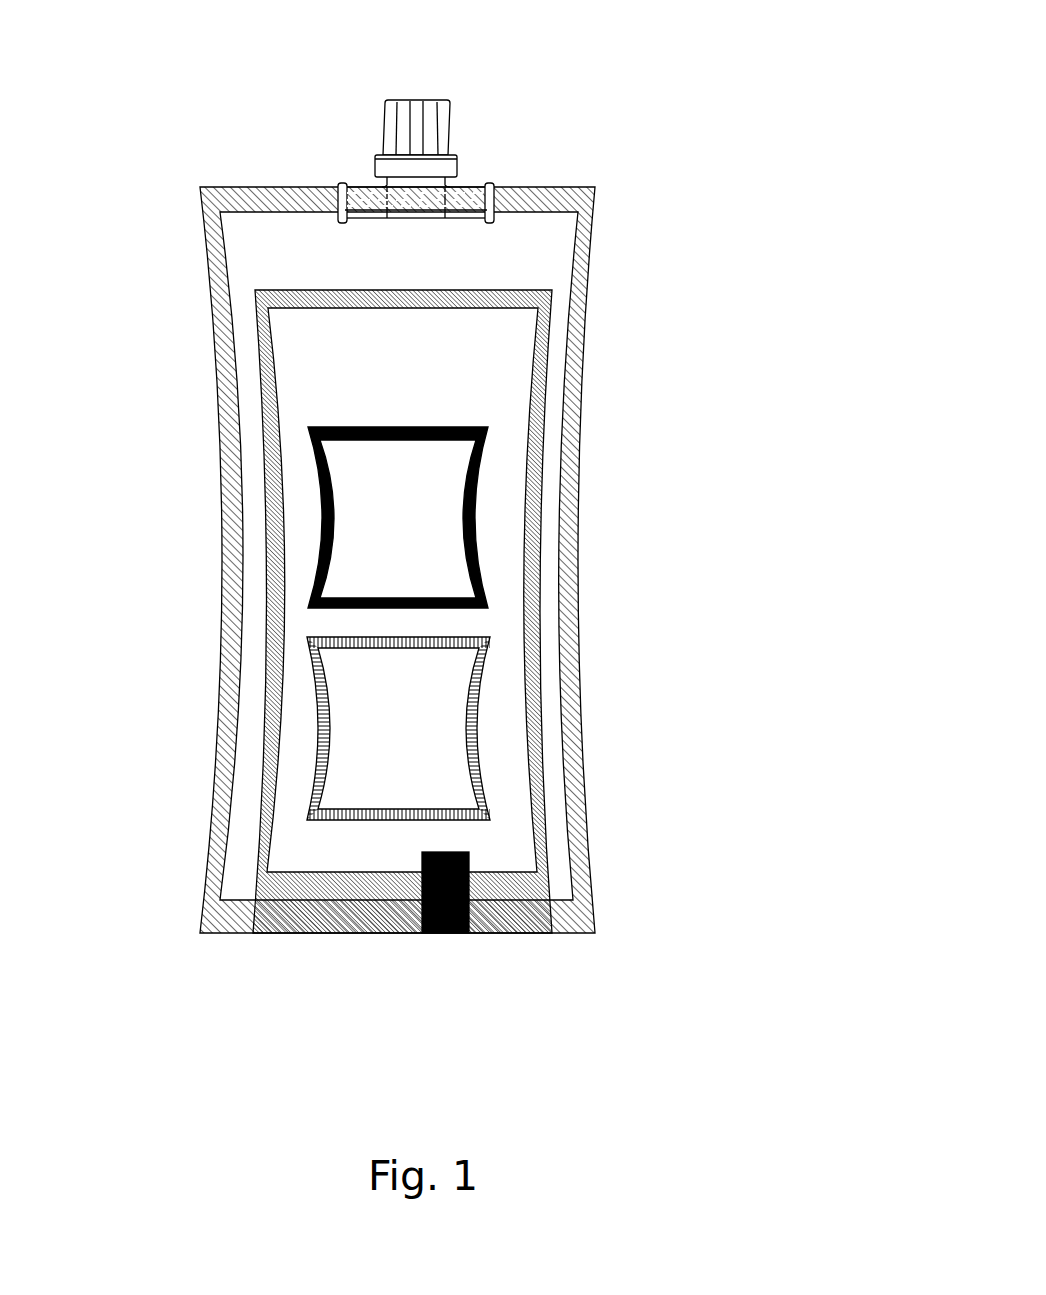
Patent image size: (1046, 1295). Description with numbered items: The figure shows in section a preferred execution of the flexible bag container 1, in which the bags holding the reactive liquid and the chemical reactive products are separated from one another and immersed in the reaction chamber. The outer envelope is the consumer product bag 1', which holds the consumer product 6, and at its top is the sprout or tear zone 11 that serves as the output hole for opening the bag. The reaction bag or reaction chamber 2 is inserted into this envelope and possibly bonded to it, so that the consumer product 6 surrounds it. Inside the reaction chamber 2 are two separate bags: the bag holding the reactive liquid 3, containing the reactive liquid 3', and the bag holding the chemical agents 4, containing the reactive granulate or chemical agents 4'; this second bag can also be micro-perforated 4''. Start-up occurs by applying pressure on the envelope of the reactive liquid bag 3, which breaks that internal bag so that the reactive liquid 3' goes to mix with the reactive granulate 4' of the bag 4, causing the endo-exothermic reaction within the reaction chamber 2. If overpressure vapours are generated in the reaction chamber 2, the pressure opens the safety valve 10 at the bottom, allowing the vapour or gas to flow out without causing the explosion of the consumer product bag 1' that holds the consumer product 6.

The flexible bag container 1 is at (150, 119).
The consumer product bag 1' is at (480, 560).
The reaction chamber 2 is at (552, 352).
The bag holding the reactive liquid 3 is at (512, 502).
The reactive liquid 3' is at (518, 519).
The bag holding the chemical agents 4 is at (507, 711).
The chemical agents 4' is at (510, 728).
The micro-perforated wall 4'' is at (590, 728).
The consumer product 6 is at (507, 252).
The safety valve 10 is at (473, 935).
The spout or tear zone 11 is at (475, 190).